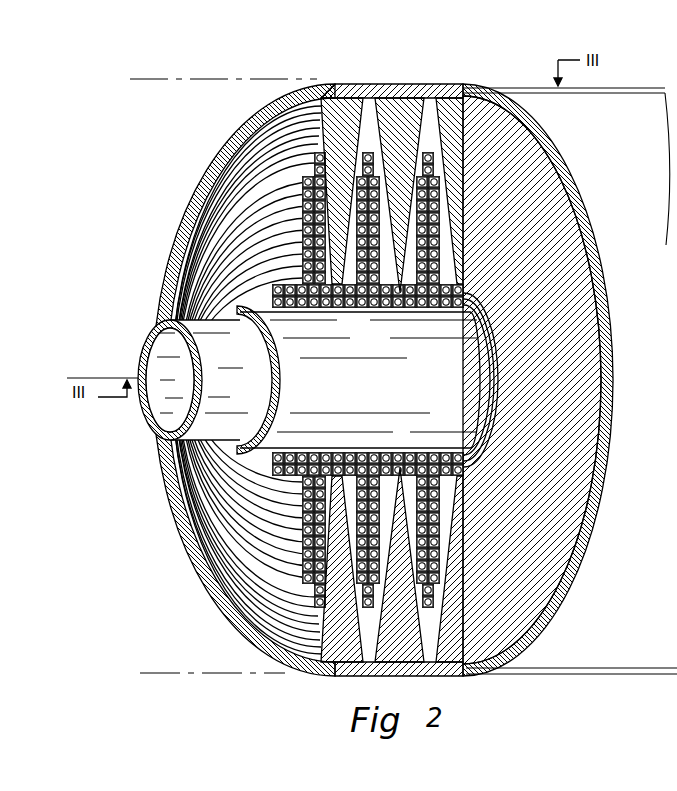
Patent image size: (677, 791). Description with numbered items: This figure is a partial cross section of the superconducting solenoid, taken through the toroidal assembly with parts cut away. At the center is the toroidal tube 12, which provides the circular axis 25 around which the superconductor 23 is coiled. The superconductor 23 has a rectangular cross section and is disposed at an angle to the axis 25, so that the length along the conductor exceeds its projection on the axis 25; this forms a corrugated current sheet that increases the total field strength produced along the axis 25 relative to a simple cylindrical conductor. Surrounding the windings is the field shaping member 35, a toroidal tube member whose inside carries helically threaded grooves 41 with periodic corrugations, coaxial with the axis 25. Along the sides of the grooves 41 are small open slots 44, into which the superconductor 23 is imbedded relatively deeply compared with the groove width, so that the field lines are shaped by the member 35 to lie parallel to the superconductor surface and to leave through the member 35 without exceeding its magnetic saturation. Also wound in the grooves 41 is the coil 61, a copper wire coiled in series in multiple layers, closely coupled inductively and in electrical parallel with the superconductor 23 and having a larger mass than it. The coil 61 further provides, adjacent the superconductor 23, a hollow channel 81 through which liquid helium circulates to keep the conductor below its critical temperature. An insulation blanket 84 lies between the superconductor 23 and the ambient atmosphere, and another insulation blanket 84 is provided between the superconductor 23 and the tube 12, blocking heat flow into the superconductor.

The tube 12 is at (146, 348).
The superconductor 23 is at (277, 127).
The axis 25 is at (175, 381).
The field shaping member 35 is at (333, 96).
The grooves 41 is at (474, 340).
The slots 44 is at (350, 120).
The coil 61 is at (406, 305).
The hollow channel 81 is at (352, 304).
The insulation blanket 84 is at (445, 95).